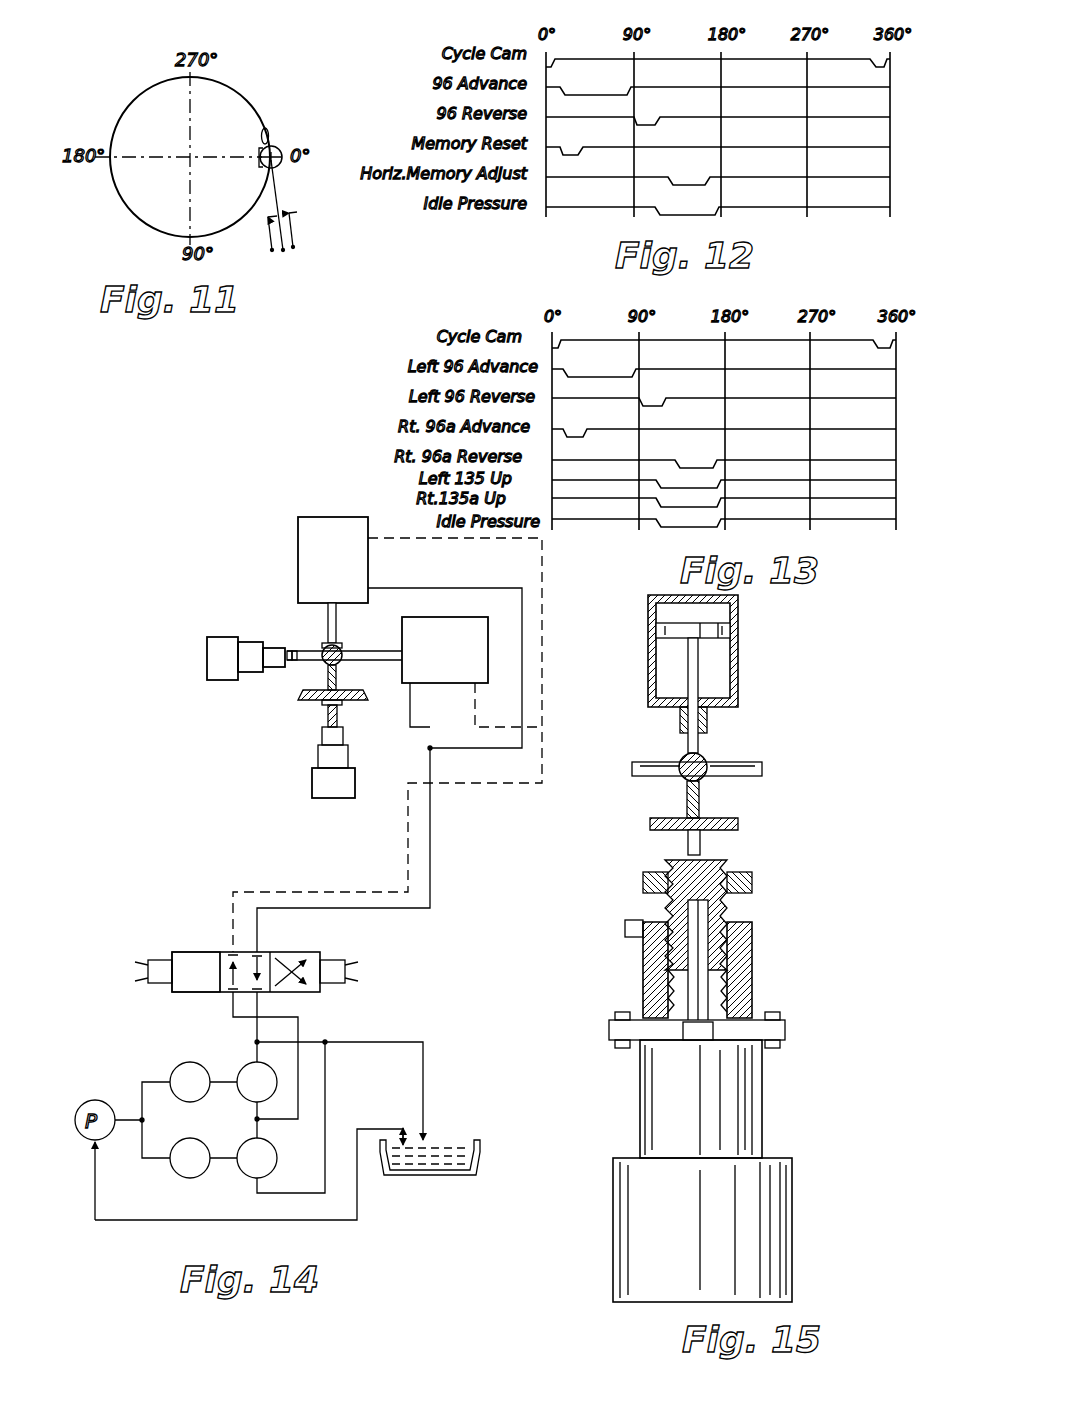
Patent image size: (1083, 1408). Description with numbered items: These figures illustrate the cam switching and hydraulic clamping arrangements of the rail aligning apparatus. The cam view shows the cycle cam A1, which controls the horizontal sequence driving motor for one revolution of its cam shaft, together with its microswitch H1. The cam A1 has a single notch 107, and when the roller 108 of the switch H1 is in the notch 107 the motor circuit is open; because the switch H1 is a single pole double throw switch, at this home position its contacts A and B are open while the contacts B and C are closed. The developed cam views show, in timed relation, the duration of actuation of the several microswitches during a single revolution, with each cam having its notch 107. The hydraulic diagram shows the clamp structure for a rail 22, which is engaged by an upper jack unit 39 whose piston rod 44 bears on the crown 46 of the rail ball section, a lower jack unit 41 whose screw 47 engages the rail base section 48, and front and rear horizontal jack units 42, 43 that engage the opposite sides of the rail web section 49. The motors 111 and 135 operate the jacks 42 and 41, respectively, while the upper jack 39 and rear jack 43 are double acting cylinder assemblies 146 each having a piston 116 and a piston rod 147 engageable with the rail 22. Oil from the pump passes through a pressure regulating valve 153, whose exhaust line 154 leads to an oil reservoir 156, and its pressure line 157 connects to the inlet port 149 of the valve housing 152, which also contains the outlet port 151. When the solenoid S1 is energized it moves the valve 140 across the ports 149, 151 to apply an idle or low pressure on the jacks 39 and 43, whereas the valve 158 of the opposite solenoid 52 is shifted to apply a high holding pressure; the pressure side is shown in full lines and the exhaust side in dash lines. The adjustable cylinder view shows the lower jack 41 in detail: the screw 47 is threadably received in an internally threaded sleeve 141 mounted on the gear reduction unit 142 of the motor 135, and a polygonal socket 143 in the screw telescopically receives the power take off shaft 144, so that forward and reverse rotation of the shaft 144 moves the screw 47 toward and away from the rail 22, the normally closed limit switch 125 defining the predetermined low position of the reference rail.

In FIG. 11, the notch 107 is at (268, 128).
In FIG. 12, the notch 107 is at (580, 95).
In FIG. 13, the notch 107 is at (588, 377).
In FIG. 11, the roller 108 is at (283, 150).
In FIG. 11, the cycle cam A1 is at (148, 222).
In FIG. 11, the contact A is at (293, 221).
In FIG. 11, the contact B is at (283, 250).
In FIG. 11, the contact C is at (271, 250).
In FIG. 11, the microswitch H1 is at (296, 233).
In FIG. 14, the upper jack unit 39 is at (298, 542).
In FIG. 15, the upper jack unit 39 is at (740, 678).
In FIG. 14, the piston rod 44 is at (322, 618).
In FIG. 14, the front horizontal jack unit 42 is at (228, 640).
In FIG. 14, the motor 111 is at (210, 663).
In FIG. 14, the crown 46 is at (342, 650).
In FIG. 15, the crown 46 is at (705, 758).
In FIG. 14, the rear horizontal jack unit 43 is at (450, 625).
In FIG. 14, the double acting cylinder assembly 146 is at (492, 650).
In FIG. 15, the double acting cylinder assembly 146 is at (742, 604).
In FIG. 14, the rail 22 is at (305, 696).
In FIG. 15, the rail 22 is at (675, 762).
In FIG. 14, the screw 47 is at (330, 717).
In FIG. 15, the screw 47 is at (720, 905).
In FIG. 14, the lower jack unit 41 is at (315, 783).
In FIG. 15, the lower jack unit 41 is at (780, 1243).
In FIG. 14, the motor 135 is at (340, 790).
In FIG. 15, the motor 135 is at (770, 1200).
In FIG. 14, the valve 158 is at (228, 960).
In FIG. 14, the valve housing 152 is at (185, 952).
In FIG. 14, the solenoid lead 52 is at (150, 963).
In FIG. 14, the valve 140 is at (300, 952).
In FIG. 14, the solenoid S1 is at (340, 960).
In FIG. 14, the inlet port 149 is at (230, 994).
In FIG. 14, the outlet port 151 is at (260, 994).
In FIG. 14, the pressure line 157 is at (300, 1025).
In FIG. 14, the pressure regulating valve 153 is at (240, 1065).
In FIG. 14, the exhaust line 154 is at (328, 1090).
In FIG. 14, the oil reservoir 156 is at (480, 1157).
In FIG. 15, the piston 116 is at (728, 632).
In FIG. 15, the piston rod 147 is at (690, 676).
In FIG. 15, the rail web section 49 is at (700, 806).
In FIG. 15, the rail base section 48 is at (660, 830).
In FIG. 15, the socket 143 is at (720, 932).
In FIG. 15, the internally threaded sleeve 141 is at (752, 958).
In FIG. 15, the power take off shaft 144 is at (720, 990).
In FIG. 15, the limit switch 125 is at (625, 928).
In FIG. 15, the gear reduction unit 142 is at (745, 1085).